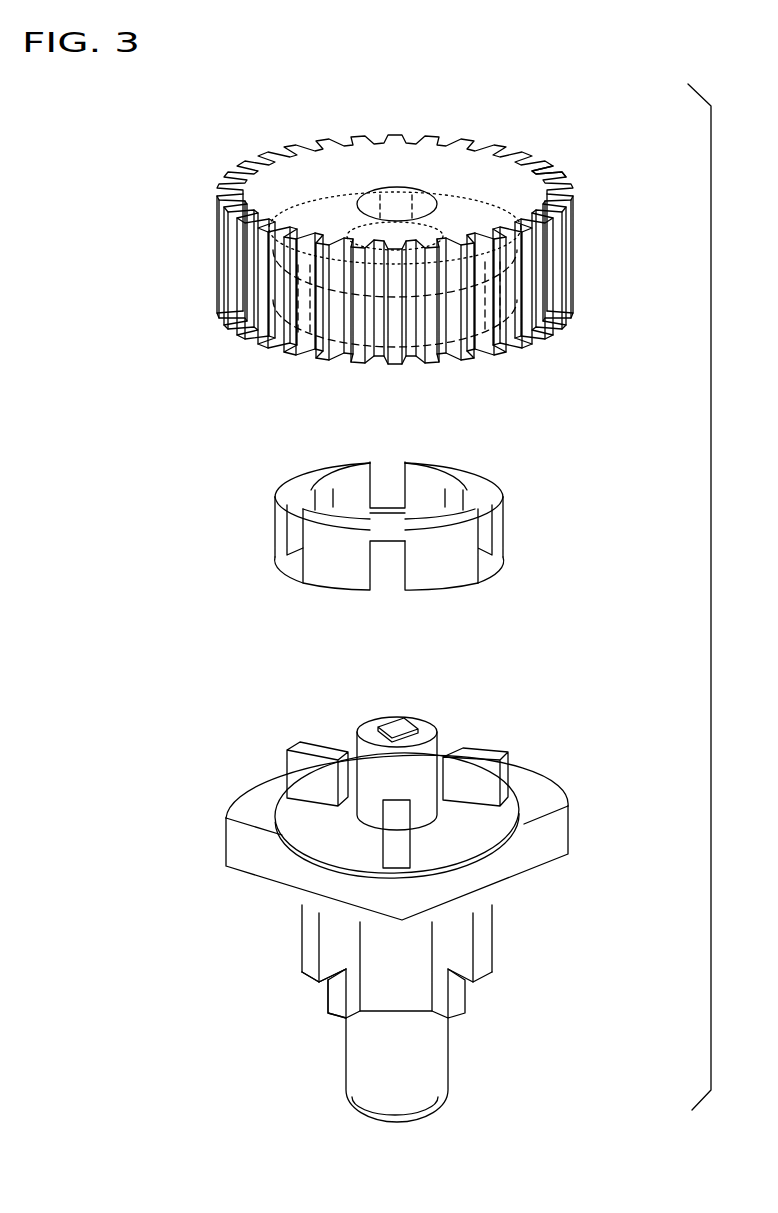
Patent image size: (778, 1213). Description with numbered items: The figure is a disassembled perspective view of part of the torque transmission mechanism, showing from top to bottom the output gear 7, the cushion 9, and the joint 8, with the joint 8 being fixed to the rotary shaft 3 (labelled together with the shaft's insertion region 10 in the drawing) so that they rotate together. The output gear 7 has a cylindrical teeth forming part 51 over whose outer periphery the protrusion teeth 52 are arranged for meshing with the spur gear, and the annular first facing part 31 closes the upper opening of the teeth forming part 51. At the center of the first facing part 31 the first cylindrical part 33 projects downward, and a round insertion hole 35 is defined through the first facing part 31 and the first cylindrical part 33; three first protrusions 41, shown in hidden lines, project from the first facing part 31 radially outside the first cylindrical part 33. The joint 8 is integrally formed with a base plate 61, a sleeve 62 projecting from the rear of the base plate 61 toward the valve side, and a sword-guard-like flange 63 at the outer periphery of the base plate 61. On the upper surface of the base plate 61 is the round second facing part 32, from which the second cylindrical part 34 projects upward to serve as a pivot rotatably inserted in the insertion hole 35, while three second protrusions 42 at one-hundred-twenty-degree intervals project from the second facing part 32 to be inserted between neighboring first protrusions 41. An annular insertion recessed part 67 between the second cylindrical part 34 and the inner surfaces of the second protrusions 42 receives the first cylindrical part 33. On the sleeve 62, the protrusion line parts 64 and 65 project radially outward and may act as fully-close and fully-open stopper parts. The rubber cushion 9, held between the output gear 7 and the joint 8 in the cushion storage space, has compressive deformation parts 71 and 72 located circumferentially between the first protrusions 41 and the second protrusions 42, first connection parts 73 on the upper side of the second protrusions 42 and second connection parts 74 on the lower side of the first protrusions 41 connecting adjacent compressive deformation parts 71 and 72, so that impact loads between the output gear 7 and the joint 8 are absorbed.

The rotary shaft 3 is at (433, 705).
The output gear 7 is at (416, 223).
The joint 8 is at (410, 895).
The cushion 9 is at (372, 519).
The projection 10 is at (410, 728).
The first facing part 31 is at (478, 182).
The second facing part 32 is at (453, 840).
The first cylindrical part 33 is at (443, 233).
The second cylindrical part 34 is at (431, 755).
The insertion hole 35 is at (365, 206).
The first protrusions 41 is at (422, 195).
The second protrusions 42 is at (300, 743).
The teeth forming part 51 is at (537, 200).
The protrusion teeth 52 is at (562, 268).
The base plate 61 is at (483, 893).
The sleeve 62 is at (446, 1055).
The flange 63 is at (550, 807).
The protrusion line part 64 is at (312, 975).
The protrusion line part 65 is at (490, 975).
The insertion recessed part 67 is at (440, 809).
The compressive deformation part 71 is at (353, 467).
The compressive deformation part 72 is at (426, 458).
The first connection parts 73 is at (292, 475).
The second connection parts 74 is at (403, 509).